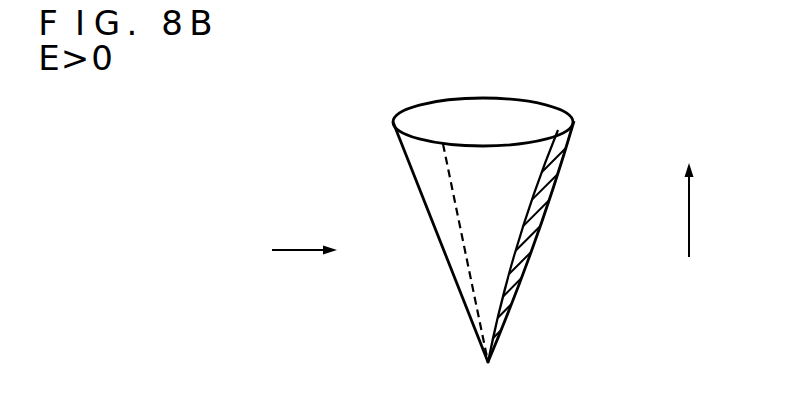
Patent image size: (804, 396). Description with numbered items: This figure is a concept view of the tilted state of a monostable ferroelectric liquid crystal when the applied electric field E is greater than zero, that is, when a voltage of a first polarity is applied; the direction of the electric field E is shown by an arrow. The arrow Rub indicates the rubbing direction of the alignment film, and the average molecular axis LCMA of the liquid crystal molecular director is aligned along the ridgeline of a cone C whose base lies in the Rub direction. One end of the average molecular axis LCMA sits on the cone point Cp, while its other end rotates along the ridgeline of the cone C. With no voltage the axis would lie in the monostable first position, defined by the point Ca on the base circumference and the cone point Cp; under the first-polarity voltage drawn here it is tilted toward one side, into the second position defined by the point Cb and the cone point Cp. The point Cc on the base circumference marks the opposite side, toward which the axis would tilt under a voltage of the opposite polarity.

The cone C is at (507, 98).
The point on the outer circumference of the base of the cone Cc is at (393, 122).
The point on the outer circumference of the base of the cone Ca is at (443, 144).
The point on the outer circumference of the base of the cone Cb is at (574, 121).
The cone point Cp is at (488, 362).
The average molecular axis LCMA is at (513, 318).
The electric field E is at (291, 253).
The rubbing direction Rub is at (730, 210).